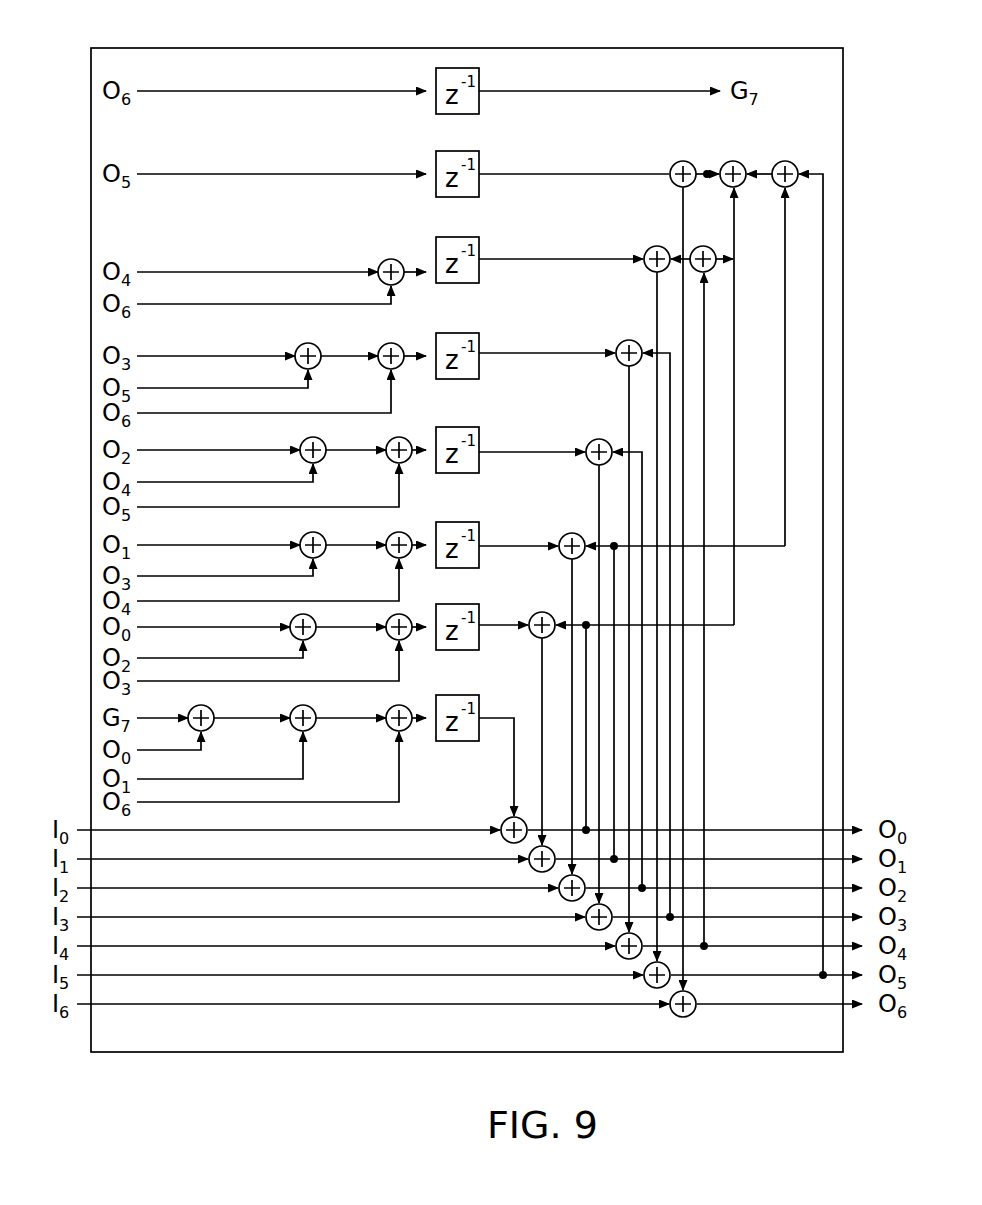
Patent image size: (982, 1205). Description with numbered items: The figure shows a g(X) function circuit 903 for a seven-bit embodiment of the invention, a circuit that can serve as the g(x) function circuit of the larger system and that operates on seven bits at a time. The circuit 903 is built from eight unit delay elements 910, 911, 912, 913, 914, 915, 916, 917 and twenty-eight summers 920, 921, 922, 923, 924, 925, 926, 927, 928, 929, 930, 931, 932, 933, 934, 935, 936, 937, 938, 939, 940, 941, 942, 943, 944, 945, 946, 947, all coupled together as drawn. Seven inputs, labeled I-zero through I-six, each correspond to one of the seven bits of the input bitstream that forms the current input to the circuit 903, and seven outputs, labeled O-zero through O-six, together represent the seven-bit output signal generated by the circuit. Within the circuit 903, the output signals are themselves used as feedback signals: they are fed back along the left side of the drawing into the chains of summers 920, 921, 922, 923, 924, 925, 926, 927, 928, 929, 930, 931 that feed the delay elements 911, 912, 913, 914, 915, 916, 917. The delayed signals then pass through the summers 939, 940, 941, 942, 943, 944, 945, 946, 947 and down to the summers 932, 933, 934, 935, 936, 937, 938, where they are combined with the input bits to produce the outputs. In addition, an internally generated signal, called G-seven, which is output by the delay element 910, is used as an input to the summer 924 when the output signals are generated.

The g(X) function circuit 903 is at (455, 48).
The unit delay element 910 is at (452, 114).
The unit delay element 911 is at (470, 151).
The unit delay element 912 is at (470, 237).
The unit delay element 913 is at (480, 340).
The unit delay element 914 is at (480, 432).
The unit delay element 915 is at (478, 522).
The unit delay element 916 is at (472, 604).
The unit delay element 917 is at (480, 698).
The summer 920 is at (308, 343).
The summer 921 is at (313, 437).
The summer 922 is at (313, 532).
The summer 923 is at (311, 638).
The summer 924 is at (203, 705).
The summer 925 is at (305, 705).
The summer 926 is at (391, 259).
The summer 927 is at (389, 343).
The summer 928 is at (399, 437).
The summer 929 is at (399, 532).
The summer 930 is at (399, 614).
The summer 931 is at (399, 705).
The summer 932 is at (505, 820).
The summer 933 is at (533, 868).
The summer 934 is at (563, 897).
The summer 935 is at (591, 926).
The summer 936 is at (621, 955).
The summer 937 is at (651, 985).
The summer 938 is at (684, 1017).
The summer 939 is at (540, 611).
The summer 940 is at (568, 521).
The summer 941 is at (597, 438).
The summer 942 is at (628, 339).
The summer 943 is at (651, 246).
The summer 944 is at (681, 160).
The summer 945 is at (730, 160).
The summer 946 is at (703, 245).
The summer 947 is at (793, 163).